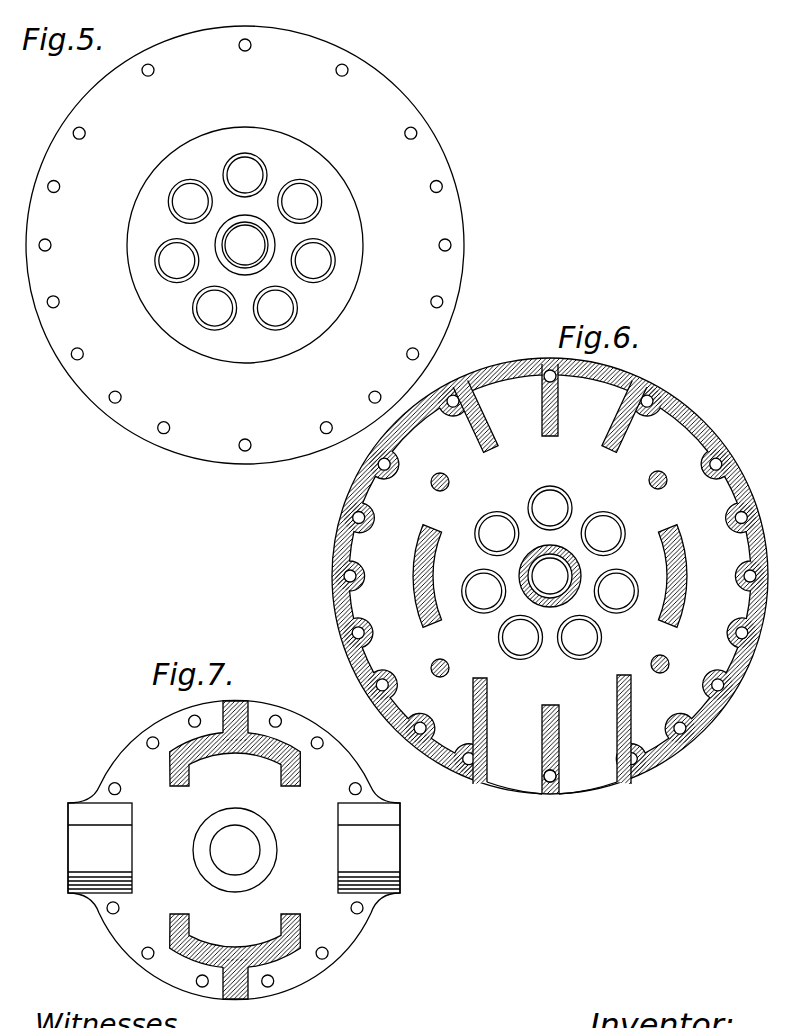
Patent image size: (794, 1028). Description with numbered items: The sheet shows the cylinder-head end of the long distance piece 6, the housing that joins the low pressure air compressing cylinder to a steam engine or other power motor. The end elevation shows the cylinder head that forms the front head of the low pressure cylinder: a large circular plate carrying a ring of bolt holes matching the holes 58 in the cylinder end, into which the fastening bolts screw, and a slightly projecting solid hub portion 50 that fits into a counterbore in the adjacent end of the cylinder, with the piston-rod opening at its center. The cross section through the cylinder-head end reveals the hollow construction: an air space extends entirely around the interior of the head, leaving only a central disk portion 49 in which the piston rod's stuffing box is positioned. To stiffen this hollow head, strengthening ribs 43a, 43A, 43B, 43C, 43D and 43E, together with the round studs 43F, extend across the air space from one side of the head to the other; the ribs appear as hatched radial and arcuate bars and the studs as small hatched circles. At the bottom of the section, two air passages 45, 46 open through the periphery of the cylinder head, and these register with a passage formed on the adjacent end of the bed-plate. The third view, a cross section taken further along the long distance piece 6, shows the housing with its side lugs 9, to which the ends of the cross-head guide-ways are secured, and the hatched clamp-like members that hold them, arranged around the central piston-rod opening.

In FIG. 5, the long distance piece 6 is at (257, 245).
In FIG. 6, the long distance piece 6 is at (550, 587).
In FIG. 7, the long distance piece 6 is at (234, 849).
In FIG. 5, the holes 58 is at (74, 131).
In FIG. 6, the holes 58 is at (343, 576).
In FIG. 5, the solid hub portion 50 is at (325, 303).
In FIG. 6, the central disk portion 49 is at (570, 586).
In FIG. 6, the strengthening rib 43a is at (492, 453).
In FIG. 6, the strengthening rib 43A is at (550, 438).
In FIG. 6, the strengthening rib 43B is at (610, 451).
In FIG. 6, the strengthening rib 43C is at (413, 552).
In FIG. 6, the strengthening rib 43D is at (683, 570).
In FIG. 6, the strengthening rib 43E is at (473, 698).
In FIG. 6, the studs 43F is at (434, 487).
In FIG. 6, the air passage 45 is at (514, 770).
In FIG. 6, the air passage 46 is at (579, 749).
In FIG. 7, the lugs 9 is at (234, 848).